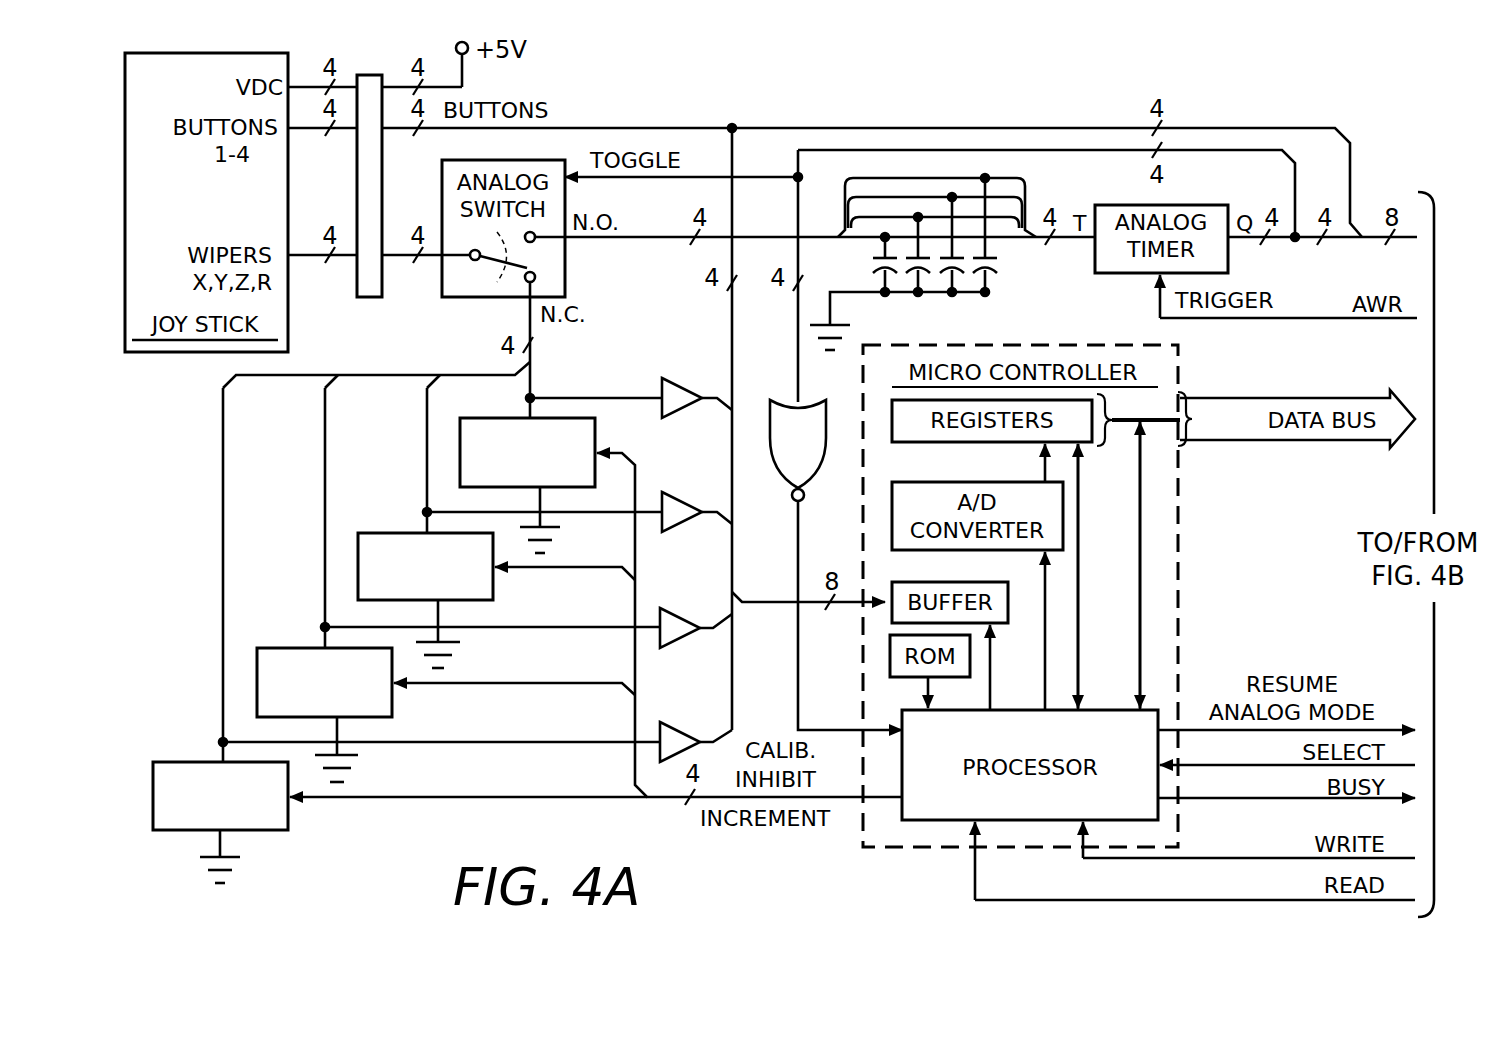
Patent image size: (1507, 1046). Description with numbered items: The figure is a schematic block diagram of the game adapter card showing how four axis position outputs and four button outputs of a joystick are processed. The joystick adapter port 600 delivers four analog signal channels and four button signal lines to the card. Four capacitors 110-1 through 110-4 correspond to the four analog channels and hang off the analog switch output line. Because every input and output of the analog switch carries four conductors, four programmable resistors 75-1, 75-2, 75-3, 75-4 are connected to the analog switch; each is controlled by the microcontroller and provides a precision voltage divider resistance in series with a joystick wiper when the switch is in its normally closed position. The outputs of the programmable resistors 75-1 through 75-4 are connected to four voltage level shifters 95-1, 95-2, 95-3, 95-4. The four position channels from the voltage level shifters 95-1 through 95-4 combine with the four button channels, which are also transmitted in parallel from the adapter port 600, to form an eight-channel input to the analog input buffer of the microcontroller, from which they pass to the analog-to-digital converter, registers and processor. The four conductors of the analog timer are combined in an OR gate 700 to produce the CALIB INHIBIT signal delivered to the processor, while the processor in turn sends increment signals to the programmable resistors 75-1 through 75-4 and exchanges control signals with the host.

The joystick adapter port 600 is at (355, 198).
The programmable resistor 75-1 is at (575, 418).
The programmable resistor 75-2 is at (380, 533).
The programmable resistor 75-3 is at (277, 648).
The programmable resistor 75-4 is at (175, 762).
The voltage level shifter 95-1 is at (675, 390).
The voltage level shifter 95-2 is at (675, 505).
The voltage level shifter 95-3 is at (675, 620).
The voltage level shifter 95-4 is at (675, 735).
The capacitor 110-1 is at (856, 265).
The capacitor 110-4 is at (1040, 287).
The OR gate 700 is at (808, 455).